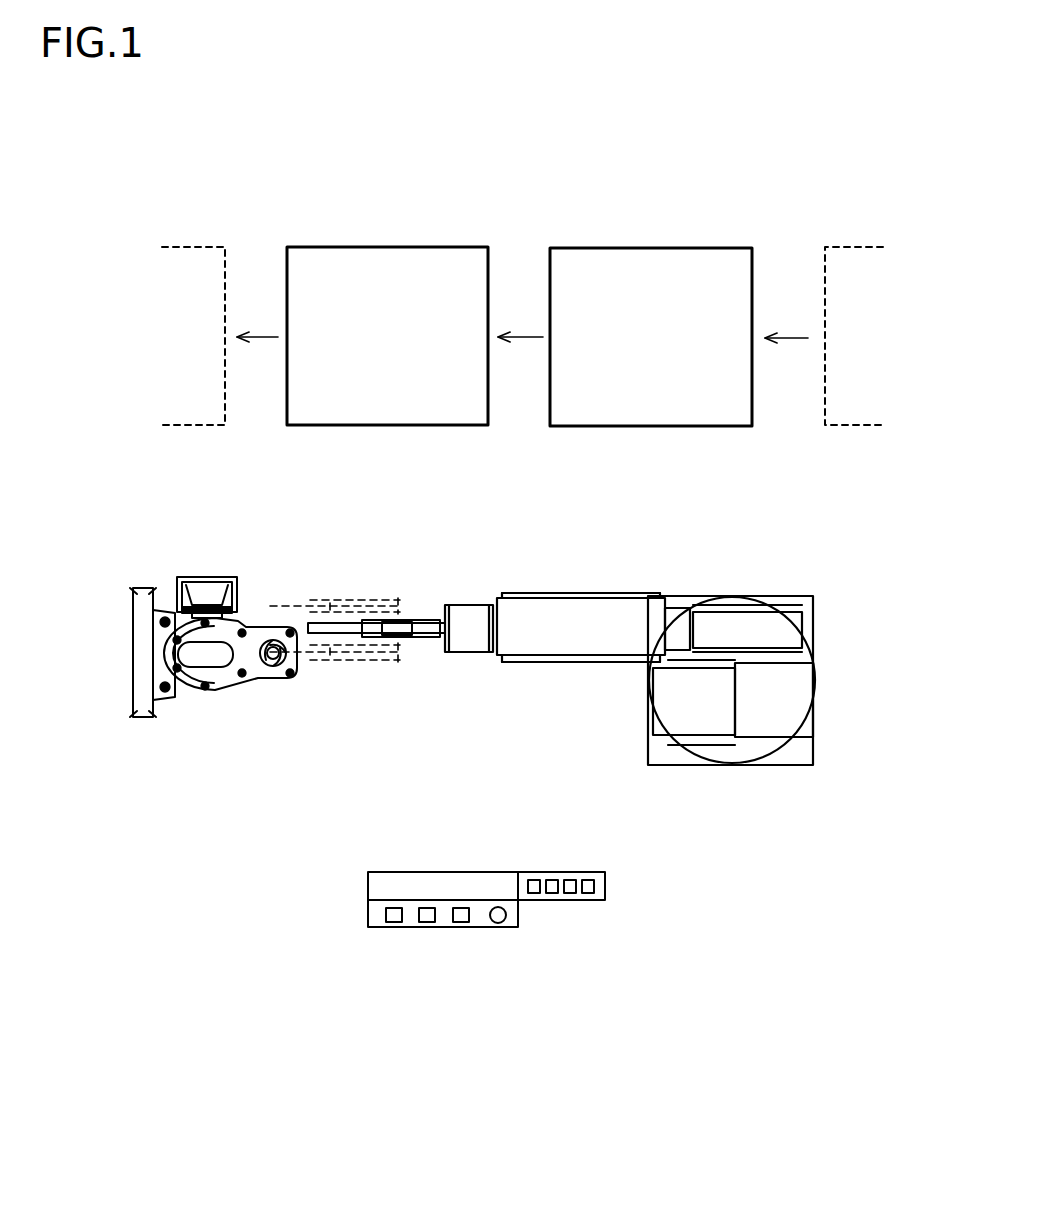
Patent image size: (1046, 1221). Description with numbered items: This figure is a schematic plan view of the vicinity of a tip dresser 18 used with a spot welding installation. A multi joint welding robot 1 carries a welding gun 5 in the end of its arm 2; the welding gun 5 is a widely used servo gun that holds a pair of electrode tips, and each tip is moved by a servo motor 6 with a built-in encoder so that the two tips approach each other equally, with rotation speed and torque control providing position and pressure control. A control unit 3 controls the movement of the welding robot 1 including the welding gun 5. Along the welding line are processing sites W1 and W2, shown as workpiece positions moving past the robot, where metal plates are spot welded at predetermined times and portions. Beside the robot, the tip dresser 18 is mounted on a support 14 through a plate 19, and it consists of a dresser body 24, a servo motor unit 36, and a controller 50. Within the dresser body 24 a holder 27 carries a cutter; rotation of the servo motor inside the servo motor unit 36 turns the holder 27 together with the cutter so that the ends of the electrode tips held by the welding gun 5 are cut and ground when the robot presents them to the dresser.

The processing site W1 is at (403, 225).
The processing site W2 is at (668, 226).
The welding robot 1 is at (770, 570).
The arm 2 is at (596, 612).
The control unit 3 is at (425, 943).
The welding gun 5 is at (357, 609).
The servo motor 6 is at (407, 640).
The wall / support 14 is at (140, 620).
The tip dresser 18 is at (182, 670).
The mounting plate 19 is at (165, 640).
The dresser body 24 is at (268, 675).
The holder 27 is at (272, 640).
The servo motor unit 36 is at (185, 563).
The controller 50 is at (573, 912).